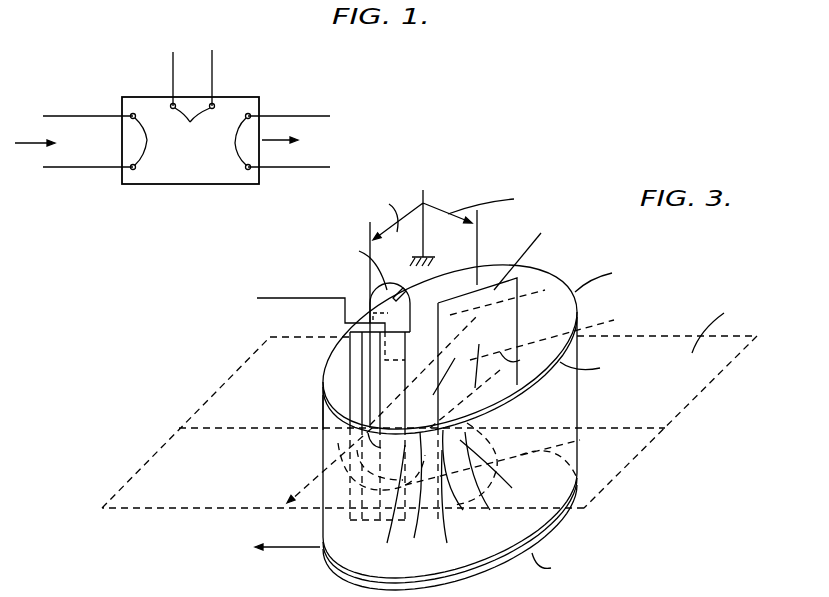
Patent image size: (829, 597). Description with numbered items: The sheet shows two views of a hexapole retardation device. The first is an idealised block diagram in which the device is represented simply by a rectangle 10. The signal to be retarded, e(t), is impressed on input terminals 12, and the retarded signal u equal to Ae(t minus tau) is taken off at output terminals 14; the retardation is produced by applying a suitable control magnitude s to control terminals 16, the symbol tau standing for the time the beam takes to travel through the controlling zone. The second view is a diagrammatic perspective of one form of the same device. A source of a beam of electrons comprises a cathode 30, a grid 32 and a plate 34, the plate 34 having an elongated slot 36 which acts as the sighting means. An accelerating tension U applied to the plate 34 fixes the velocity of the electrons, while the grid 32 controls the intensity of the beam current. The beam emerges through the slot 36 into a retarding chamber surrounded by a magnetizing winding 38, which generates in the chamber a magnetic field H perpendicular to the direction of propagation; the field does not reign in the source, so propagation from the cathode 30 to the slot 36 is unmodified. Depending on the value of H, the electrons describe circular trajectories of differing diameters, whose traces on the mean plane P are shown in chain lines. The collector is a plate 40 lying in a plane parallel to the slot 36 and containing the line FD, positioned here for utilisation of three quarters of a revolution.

In FIG. 1, the rectangle 10 is at (140, 178).
In FIG. 1, the input terminals 12 is at (151, 142).
In FIG. 1, the output terminals 14 is at (232, 142).
In FIG. 1, the control terminals 16 is at (193, 126).
In FIG. 3, the cathode 30 is at (410, 298).
In FIG. 3, the grid 32 is at (384, 310).
In FIG. 3, the plate 34 is at (340, 334).
In FIG. 3, the elongated slot 36 is at (328, 365).
In FIG. 3, the magnetizing winding 38 is at (312, 406).
In FIG. 3, the plate 40 is at (547, 307).